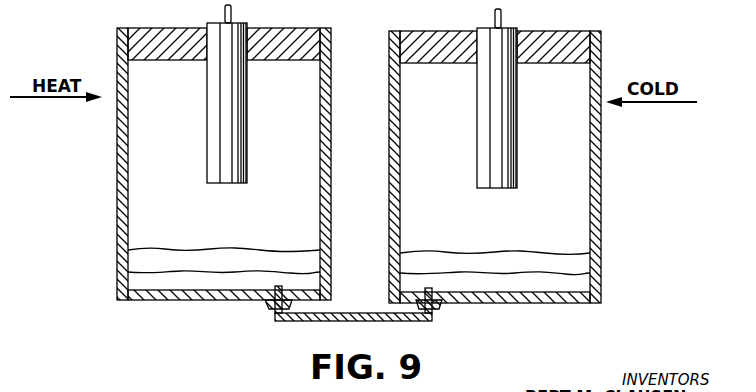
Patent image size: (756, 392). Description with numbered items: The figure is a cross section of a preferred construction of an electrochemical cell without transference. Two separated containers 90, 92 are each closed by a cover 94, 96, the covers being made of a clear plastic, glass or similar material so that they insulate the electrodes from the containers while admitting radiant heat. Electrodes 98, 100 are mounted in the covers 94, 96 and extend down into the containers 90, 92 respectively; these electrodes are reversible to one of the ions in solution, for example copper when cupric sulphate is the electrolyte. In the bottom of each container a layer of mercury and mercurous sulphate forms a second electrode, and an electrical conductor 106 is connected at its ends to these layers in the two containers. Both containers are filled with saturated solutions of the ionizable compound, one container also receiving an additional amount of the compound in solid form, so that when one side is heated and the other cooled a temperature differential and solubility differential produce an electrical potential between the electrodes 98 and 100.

The container 90 is at (331, 173).
The container 92 is at (390, 198).
The cover 94 is at (168, 35).
The cover 96 is at (548, 40).
The electrode 98 is at (214, 133).
The electrode 100 is at (505, 135).
The electrical conductor 106 is at (433, 318).